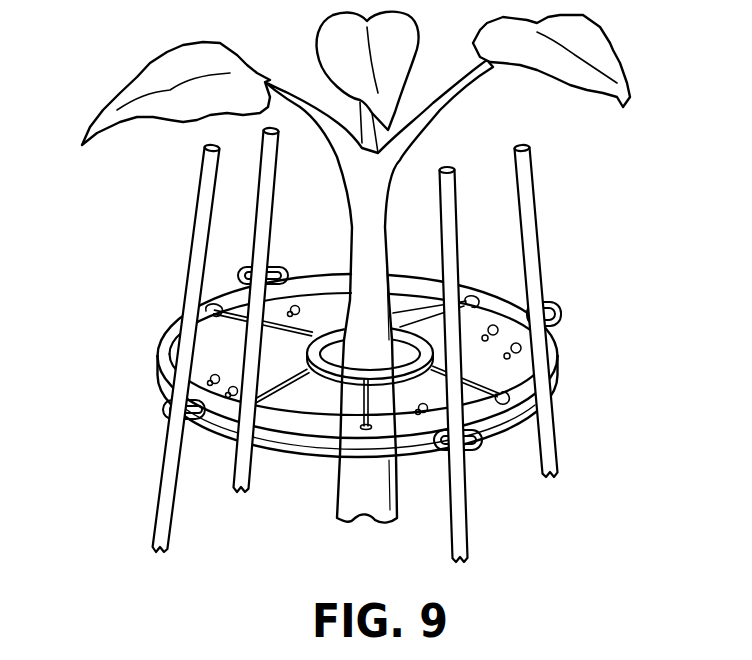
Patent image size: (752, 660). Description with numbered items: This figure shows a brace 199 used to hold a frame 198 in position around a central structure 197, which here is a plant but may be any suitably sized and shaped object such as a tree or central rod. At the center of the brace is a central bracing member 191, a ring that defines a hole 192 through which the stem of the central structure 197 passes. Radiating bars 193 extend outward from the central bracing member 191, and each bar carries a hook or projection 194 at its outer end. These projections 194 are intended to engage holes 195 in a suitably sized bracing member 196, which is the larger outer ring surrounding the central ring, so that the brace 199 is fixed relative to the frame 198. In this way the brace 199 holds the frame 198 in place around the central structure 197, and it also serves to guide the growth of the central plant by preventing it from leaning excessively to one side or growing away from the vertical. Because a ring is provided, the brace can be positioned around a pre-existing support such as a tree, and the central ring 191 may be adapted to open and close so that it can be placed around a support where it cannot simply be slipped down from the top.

The central bracing member 191 is at (407, 328).
The hole 192 is at (405, 353).
The radiating bars 193 is at (528, 359).
The hooks or projections 194 is at (507, 395).
The holes 195 is at (548, 413).
The bracing member 196 is at (172, 335).
The central structure 197 is at (613, 50).
The frame 198 is at (158, 489).
The brace 199 is at (340, 368).